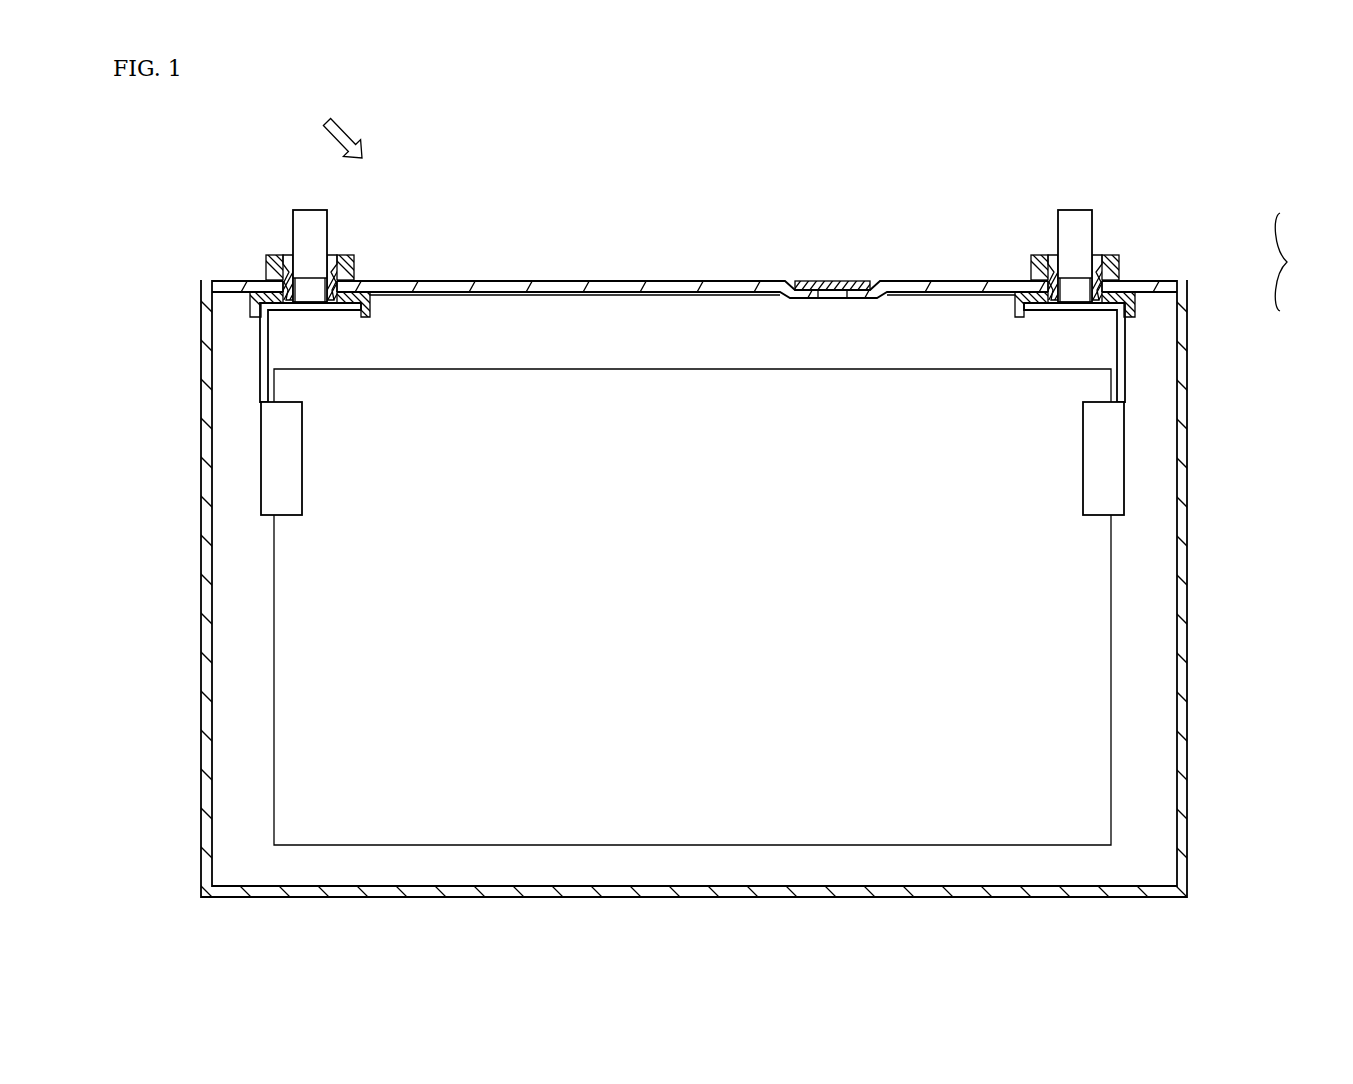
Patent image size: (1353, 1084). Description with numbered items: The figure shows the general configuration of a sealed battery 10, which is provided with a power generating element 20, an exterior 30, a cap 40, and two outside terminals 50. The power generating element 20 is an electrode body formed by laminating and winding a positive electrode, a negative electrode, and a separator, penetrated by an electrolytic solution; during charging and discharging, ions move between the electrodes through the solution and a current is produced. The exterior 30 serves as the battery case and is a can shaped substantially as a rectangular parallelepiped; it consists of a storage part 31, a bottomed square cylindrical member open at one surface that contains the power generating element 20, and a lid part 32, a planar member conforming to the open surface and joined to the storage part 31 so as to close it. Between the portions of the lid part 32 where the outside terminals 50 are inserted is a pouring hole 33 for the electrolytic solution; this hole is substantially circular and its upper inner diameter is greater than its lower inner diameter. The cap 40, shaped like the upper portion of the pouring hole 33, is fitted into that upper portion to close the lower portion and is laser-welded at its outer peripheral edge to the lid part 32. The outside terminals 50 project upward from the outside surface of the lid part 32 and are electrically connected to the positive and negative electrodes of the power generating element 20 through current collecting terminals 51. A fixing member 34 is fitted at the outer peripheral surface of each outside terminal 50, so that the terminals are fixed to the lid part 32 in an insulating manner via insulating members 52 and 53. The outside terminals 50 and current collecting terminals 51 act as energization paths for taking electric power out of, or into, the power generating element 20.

The battery 10 is at (333, 119).
The power generating element 20 is at (1072, 548).
The exterior 30 is at (1302, 262).
The storage part 31 is at (1182, 307).
The lid part 32 is at (1157, 286).
The pouring hole 33 is at (818, 297).
The fixing member 34 is at (268, 266).
The cap 40 is at (829, 285).
The outside terminal 50 is at (309, 208).
The current collecting terminal 51 is at (264, 335).
The insulating member 52 is at (290, 256).
The insulating member 53 is at (250, 305).